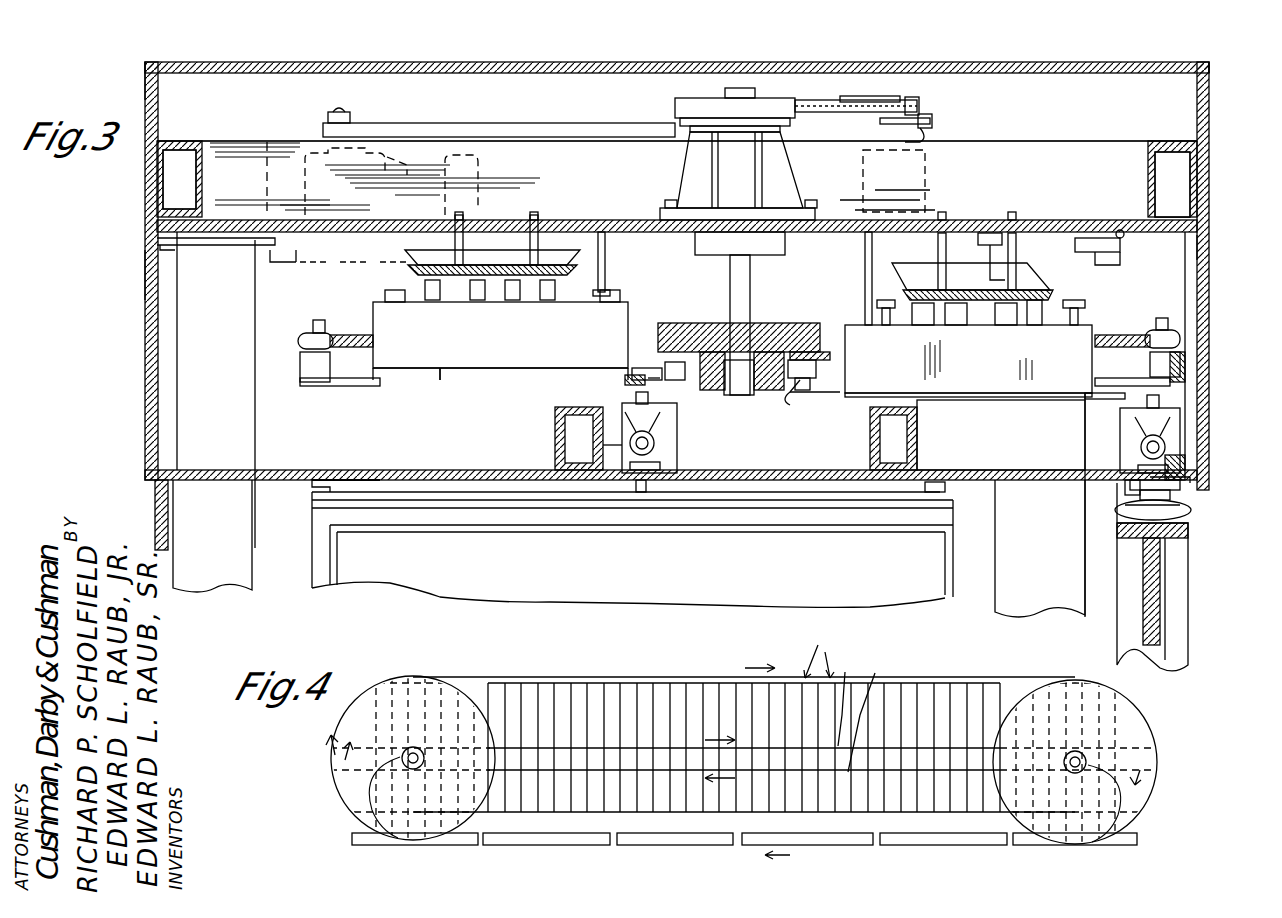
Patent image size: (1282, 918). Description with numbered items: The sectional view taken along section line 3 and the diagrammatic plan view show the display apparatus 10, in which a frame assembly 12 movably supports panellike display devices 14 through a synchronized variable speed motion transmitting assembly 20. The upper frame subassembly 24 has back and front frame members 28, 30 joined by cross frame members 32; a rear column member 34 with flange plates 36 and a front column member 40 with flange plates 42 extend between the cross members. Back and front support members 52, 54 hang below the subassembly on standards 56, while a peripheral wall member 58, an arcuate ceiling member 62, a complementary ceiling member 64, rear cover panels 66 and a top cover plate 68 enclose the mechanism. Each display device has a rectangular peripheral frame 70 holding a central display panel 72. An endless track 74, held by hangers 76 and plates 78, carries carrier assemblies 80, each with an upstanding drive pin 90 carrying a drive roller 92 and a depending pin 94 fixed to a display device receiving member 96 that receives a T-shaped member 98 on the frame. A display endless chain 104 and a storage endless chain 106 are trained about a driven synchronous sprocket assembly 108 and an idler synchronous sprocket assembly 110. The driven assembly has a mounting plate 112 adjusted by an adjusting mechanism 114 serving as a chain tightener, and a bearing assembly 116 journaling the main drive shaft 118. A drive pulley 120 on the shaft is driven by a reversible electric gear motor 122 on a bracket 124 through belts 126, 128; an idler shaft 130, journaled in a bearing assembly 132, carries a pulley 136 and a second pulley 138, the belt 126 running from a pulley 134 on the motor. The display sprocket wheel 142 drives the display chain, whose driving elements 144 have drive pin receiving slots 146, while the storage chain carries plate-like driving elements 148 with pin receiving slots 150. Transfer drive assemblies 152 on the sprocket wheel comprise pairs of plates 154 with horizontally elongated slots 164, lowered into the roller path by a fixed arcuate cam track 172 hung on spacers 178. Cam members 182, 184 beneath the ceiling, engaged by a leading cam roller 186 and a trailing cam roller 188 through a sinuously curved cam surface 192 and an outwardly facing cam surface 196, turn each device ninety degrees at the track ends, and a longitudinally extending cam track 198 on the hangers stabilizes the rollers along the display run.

In FIG. 3, the section line 3 is at (665, 468).
In FIG. 3, the display apparatus 10 is at (1228, 128).
In FIG. 4, the display apparatus 10 is at (520, 848).
In FIG. 3, the frame assembly 12 is at (140, 82).
In FIG. 3, the display devices 14 is at (392, 592).
In FIG. 4, the display devices 14 is at (640, 870).
In FIG. 4, the synchronized variable speed motion transmitting assembly 20 is at (328, 775).
In FIG. 3, the upper frame subassembly 24 is at (143, 184).
In FIG. 3, the back frame member 28 is at (182, 140).
In FIG. 3, the front frame member 30 is at (1172, 142).
In FIG. 3, the cross frame members 32 is at (1025, 160).
In FIG. 3, the rear column member 34 is at (240, 430).
In FIG. 3, the flange plates 36 is at (220, 247).
In FIG. 3, the front column member 40 is at (1000, 446).
In FIG. 3, the flange plates 42 is at (1095, 266).
In FIG. 3, the back support member 52 is at (555, 444).
In FIG. 3, the front support member 54 is at (870, 458).
In FIG. 3, the standards 56 is at (606, 278).
In FIG. 3, the peripheral wall member 58 is at (144, 293).
In FIG. 3, the arcuate ceiling member 62 is at (795, 496).
In FIG. 3, the complementary ceiling member 64 is at (413, 470).
In FIG. 3, the rear cover panels 66 is at (156, 500).
In FIG. 3, the top cover plate 68 is at (520, 73).
In FIG. 3, the rectangular peripheral frame 70 is at (1117, 540).
In FIG. 3, the central display panel 72 is at (670, 580).
In FIG. 3, the track 74 is at (665, 445).
In FIG. 3, the hangers 76 is at (1198, 250).
In FIG. 3, the plates 78 is at (565, 405).
In FIG. 3, the carrier assemblies 80 is at (680, 412).
In FIG. 3, the drive pin 90 is at (1218, 405).
In FIG. 3, the drive roller 92 is at (1188, 375).
In FIG. 3, the shaft or pin 94 is at (1188, 455).
In FIG. 3, the display device receiving member 96 is at (1122, 498).
In FIG. 3, the T-shaped member 98 is at (1118, 515).
In FIG. 3, the display endless chain 104 is at (320, 330).
In FIG. 4, the display endless chain 104 is at (688, 674).
In FIG. 3, the storage endless chain 106 is at (792, 400).
In FIG. 4, the storage endless chain 106 is at (875, 710).
In FIG. 4, the driven synchronous sprocket assembly 108 is at (425, 657).
In FIG. 4, the idler synchronous sprocket assembly 110 is at (1158, 686).
In FIG. 3, the mounting plate 112 is at (925, 200).
In FIG. 3, the adjusting mechanism 114 is at (238, 216).
In FIG. 3, the heavy duty bearing assembly 116 is at (690, 185).
In FIG. 3, the main drive shaft 118 is at (729, 294).
In FIG. 3, the drive pulley 120 is at (688, 104).
In FIG. 3, the reversible electric gear motor 122 is at (340, 271).
In FIG. 3, the bracket 124 is at (254, 305).
In FIG. 3, the belt 126 is at (470, 122).
In FIG. 3, the belt 128 is at (838, 104).
In FIG. 3, the idler shaft 130 is at (925, 144).
In FIG. 3, the bearing assembly 132 is at (862, 158).
In FIG. 3, the pulley 134 is at (330, 114).
In FIG. 3, the coupling 136 is at (932, 124).
In FIG. 3, the second pulley 138 is at (920, 104).
In FIG. 3, the display sprocket wheel 142 is at (818, 322).
In FIG. 3, the carrier assembly driving elements 144 is at (298, 370).
In FIG. 3, the drive pin receiving slot 146 is at (330, 388).
In FIG. 3, the carrier assembly driving elements 148 is at (818, 374).
In FIG. 3, the pin receiving slot 150 is at (657, 366).
In FIG. 3, the transfer drive assemblies 152 is at (450, 372).
In FIG. 3, the drive members or plates 154 is at (510, 372).
In FIG. 3, the horizontally elongated slots 164 is at (560, 326).
In FIG. 3, the arcuate cam track 172 is at (610, 240).
In FIG. 3, the spacers 178 is at (460, 262).
In FIG. 3, the cam member 182 is at (240, 470).
In FIG. 3, the cam member 184 is at (503, 510).
In FIG. 3, the leading cam roller 186 is at (342, 470).
In FIG. 3, the trailing cam roller 188 is at (935, 498).
In FIG. 3, the sinuously curved cam surface 192 is at (316, 500).
In FIG. 3, the outwardly facing cam surface 196 is at (357, 493).
In FIG. 3, the cam track 198 is at (1180, 480).